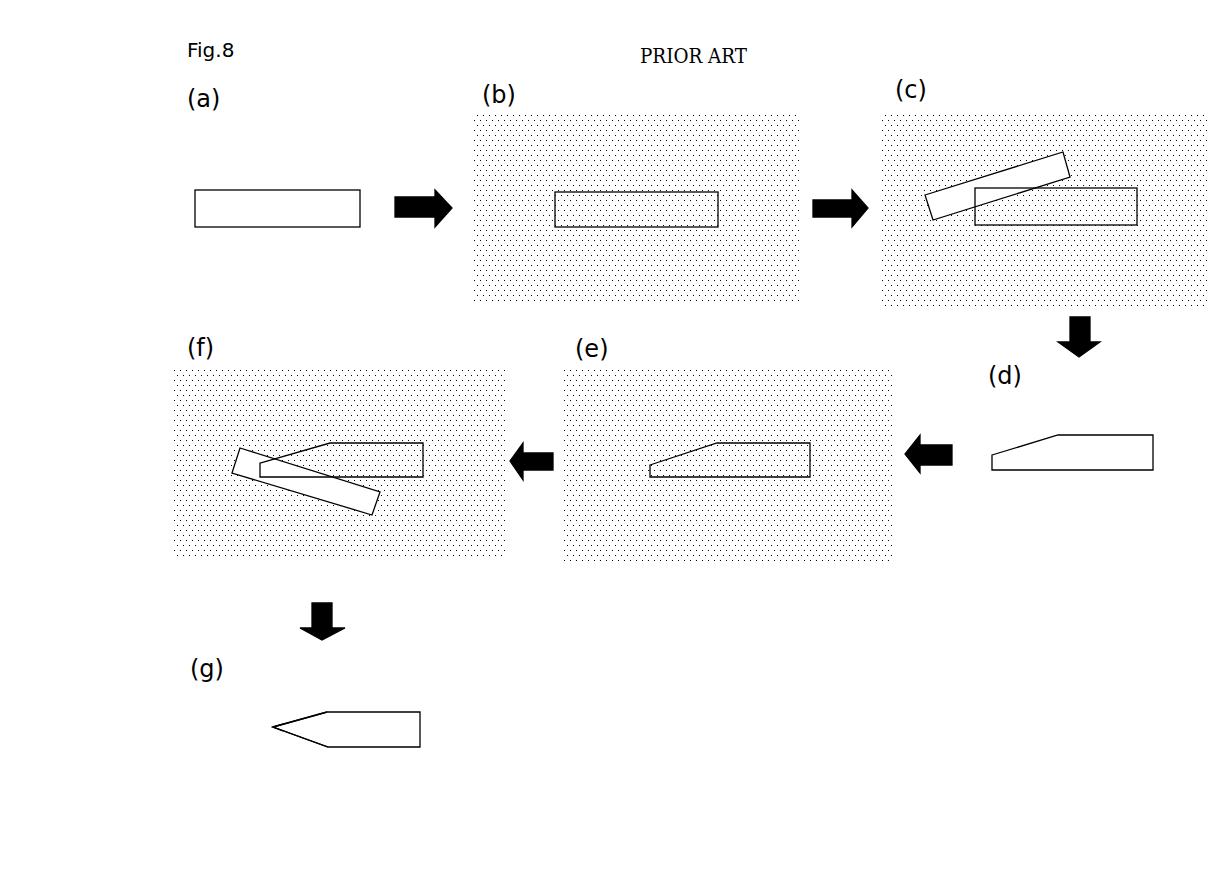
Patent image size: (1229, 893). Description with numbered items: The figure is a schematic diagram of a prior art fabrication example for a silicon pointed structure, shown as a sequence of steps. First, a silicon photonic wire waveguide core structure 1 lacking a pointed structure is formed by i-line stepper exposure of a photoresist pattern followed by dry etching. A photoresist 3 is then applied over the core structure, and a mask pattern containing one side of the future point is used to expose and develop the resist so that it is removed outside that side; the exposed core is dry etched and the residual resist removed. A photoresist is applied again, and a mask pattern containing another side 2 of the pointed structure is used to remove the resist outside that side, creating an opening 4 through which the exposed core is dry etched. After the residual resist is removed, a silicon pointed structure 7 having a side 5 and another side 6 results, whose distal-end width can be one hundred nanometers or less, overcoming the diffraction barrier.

The silicon photonic wire waveguide core structure 1 is at (322, 198).
The side constituting silicon pointed structure 2 is at (1022, 442).
The photoresist 3 is at (687, 112).
The opening in photoresist 4 is at (365, 503).
The side constituting silicon pointed structure 5 is at (310, 707).
The other side constituting silicon pointed structure 6 is at (313, 740).
The silicon pointed structure 7 is at (277, 730).